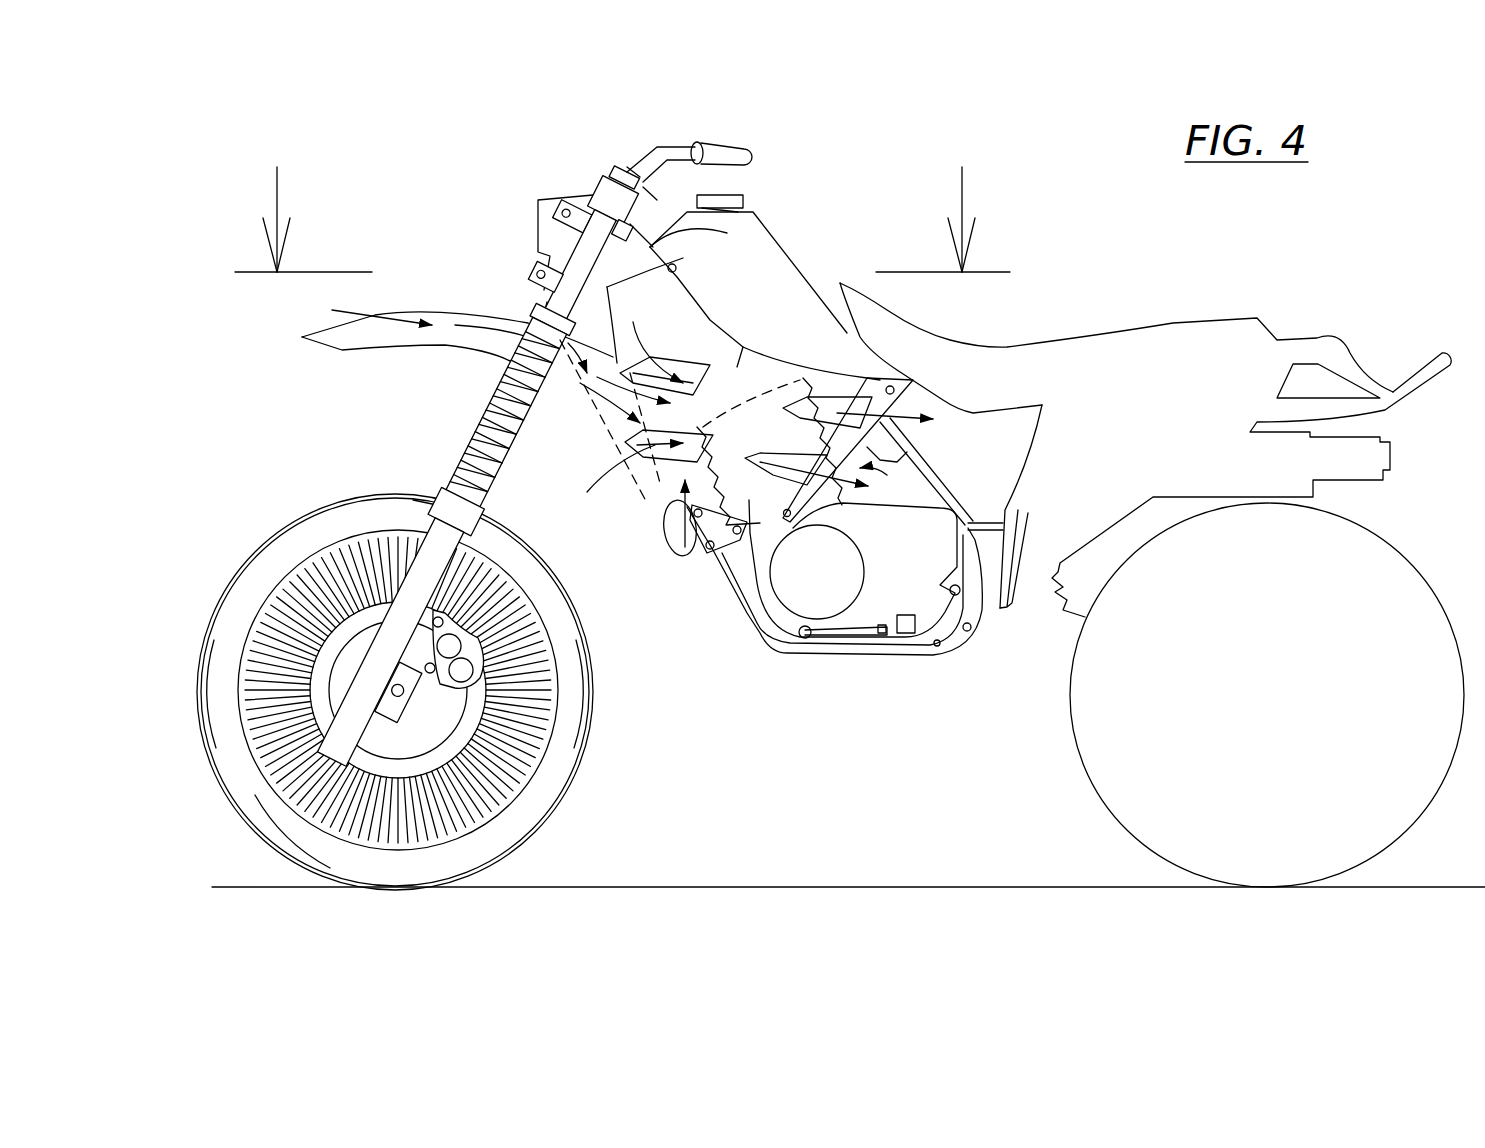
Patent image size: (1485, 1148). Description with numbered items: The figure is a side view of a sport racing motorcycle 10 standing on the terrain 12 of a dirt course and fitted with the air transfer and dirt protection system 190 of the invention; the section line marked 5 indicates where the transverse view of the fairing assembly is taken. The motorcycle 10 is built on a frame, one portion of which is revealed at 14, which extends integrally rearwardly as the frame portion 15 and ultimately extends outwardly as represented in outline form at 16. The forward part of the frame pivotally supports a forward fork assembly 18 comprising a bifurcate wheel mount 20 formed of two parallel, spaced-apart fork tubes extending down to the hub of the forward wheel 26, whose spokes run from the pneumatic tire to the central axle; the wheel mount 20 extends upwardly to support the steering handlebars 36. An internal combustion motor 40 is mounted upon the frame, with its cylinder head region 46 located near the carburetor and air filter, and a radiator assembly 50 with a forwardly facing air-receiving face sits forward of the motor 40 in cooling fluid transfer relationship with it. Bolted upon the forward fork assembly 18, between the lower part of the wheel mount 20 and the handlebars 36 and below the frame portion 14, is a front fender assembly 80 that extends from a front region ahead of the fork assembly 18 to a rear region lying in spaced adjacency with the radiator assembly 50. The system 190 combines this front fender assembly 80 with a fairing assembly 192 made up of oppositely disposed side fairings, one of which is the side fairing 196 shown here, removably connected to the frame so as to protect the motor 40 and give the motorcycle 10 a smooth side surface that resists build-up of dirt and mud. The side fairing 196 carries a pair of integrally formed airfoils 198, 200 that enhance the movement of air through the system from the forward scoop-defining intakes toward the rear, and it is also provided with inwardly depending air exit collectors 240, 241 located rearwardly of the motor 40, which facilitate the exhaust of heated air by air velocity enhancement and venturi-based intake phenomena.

The section line 5- 5 is at (622, 241).
The sport motorcycle 10 is at (1062, 192).
The terrain 12 is at (790, 889).
The frame 14 is at (745, 623).
The frame portion 15 is at (980, 607).
The frame portion 16 is at (1430, 370).
The forward fork assembly 18 is at (515, 268).
The bifurcate wheel mount 20 is at (472, 420).
The forward wheel 26 is at (570, 808).
The steering handlebars 36 is at (672, 150).
The internal combustion motor 40 is at (803, 592).
The cylinder head region 46 is at (892, 481).
The radiator assembly 50 is at (667, 522).
The front fender assembly 80 is at (452, 282).
The air transfer and dirt protection system 190 is at (593, 455).
The fairing assembly 192 is at (727, 300).
The side fairing 196 is at (737, 367).
The airfoil 198 is at (690, 363).
The airfoil 200 is at (697, 415).
The air exit collector 240 is at (880, 380).
The air exit collector 241 is at (723, 555).